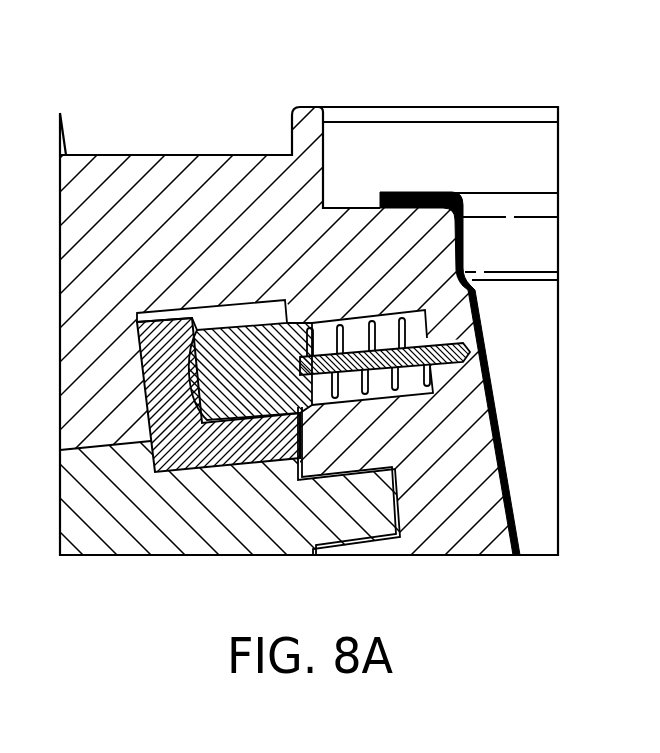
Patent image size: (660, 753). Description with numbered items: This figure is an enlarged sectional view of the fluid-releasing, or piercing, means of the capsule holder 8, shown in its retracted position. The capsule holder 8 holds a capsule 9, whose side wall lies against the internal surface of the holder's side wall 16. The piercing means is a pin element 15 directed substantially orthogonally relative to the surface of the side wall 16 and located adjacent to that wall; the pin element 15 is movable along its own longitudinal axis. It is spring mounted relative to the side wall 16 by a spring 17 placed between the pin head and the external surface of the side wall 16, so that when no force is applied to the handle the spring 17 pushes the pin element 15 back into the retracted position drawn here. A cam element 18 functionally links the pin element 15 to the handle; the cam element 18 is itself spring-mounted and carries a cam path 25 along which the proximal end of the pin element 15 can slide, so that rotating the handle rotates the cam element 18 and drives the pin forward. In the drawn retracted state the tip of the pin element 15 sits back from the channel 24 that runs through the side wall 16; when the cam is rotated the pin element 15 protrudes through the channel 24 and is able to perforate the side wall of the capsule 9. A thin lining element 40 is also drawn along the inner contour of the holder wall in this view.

The capsule holder 8 is at (115, 153).
The capsule 9 is at (492, 238).
The pin element 15 is at (333, 335).
The side wall 16 is at (492, 520).
The spring 17 is at (363, 400).
The cam element 18 is at (188, 458).
The channel 24 is at (472, 345).
The cam path 25 is at (203, 330).
The seal 40 is at (505, 436).